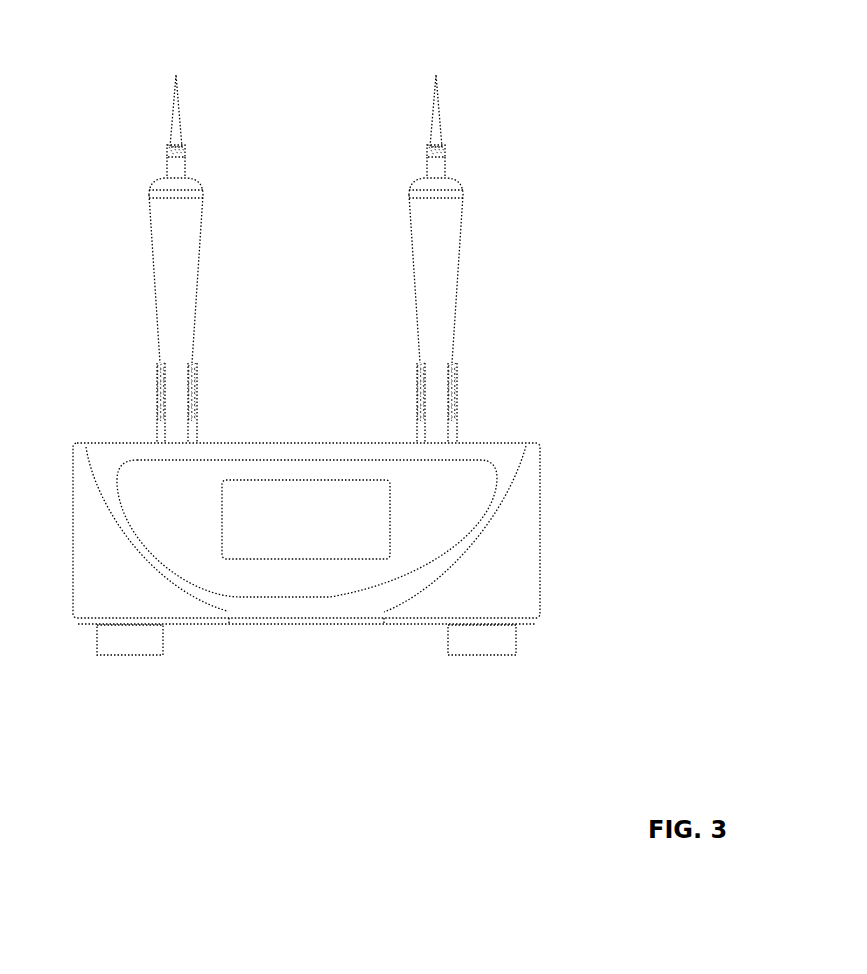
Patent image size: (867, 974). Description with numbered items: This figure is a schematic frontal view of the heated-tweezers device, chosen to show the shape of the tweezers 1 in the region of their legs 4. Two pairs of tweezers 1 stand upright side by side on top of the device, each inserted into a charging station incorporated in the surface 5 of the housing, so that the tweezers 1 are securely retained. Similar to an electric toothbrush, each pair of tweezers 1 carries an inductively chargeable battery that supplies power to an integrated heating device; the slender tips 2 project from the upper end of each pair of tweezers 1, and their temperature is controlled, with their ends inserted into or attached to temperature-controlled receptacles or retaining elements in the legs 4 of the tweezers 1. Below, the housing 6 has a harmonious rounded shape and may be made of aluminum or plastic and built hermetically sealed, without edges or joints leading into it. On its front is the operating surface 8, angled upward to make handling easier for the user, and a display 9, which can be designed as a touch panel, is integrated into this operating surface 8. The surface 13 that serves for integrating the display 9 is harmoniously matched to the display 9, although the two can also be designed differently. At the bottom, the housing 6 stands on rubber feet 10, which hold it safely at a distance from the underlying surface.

The tweezers 1 is at (203, 225).
The tips 2 is at (180, 128).
The legs 4 is at (190, 320).
The surface of the housing 5 is at (318, 442).
The housing 6 is at (540, 525).
The operating surface 8 is at (307, 528).
The display 9 is at (306, 519).
The rubber feet 10 is at (133, 655).
The surface serving for the integration of the display 13 is at (438, 577).